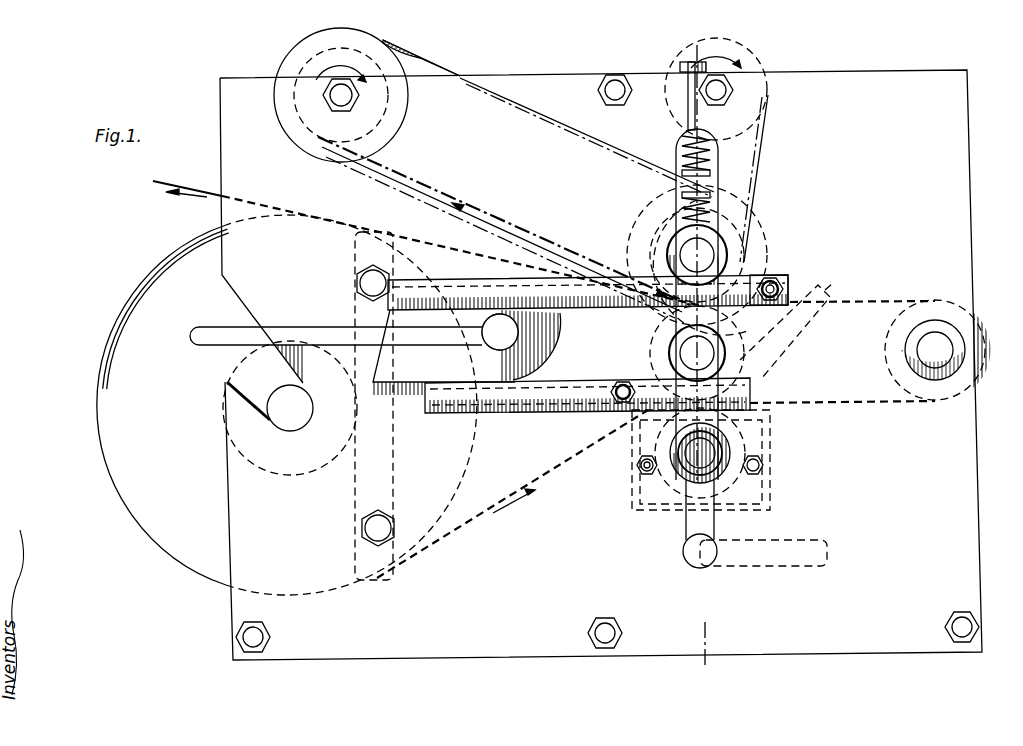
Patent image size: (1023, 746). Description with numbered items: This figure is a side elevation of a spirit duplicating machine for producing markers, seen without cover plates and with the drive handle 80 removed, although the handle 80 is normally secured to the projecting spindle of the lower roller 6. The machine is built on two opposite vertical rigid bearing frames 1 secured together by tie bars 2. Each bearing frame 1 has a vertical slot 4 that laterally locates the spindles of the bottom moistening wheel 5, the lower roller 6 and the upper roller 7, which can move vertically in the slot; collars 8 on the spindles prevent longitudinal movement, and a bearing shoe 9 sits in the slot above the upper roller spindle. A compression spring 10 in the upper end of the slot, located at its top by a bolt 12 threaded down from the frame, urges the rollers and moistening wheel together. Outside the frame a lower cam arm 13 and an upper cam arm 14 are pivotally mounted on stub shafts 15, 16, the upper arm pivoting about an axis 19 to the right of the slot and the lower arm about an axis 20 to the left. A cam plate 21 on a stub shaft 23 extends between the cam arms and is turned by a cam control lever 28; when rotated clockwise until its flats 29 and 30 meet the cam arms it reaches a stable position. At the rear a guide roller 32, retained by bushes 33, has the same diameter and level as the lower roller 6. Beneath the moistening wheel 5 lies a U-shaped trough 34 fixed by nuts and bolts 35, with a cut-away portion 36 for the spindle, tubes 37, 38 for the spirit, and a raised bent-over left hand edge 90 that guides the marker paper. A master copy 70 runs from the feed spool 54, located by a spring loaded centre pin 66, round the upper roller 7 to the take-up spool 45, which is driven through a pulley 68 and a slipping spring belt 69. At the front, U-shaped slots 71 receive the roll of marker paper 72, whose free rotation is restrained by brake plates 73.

The bearing frame 1 is at (876, 109).
The tie bar 2 is at (613, 80).
The vertical slot 4 is at (700, 207).
The bottom moistening wheel 5 is at (763, 441).
The lower roller 6 is at (730, 336).
The upper roller 7 is at (747, 258).
The collar 8 is at (668, 244).
The bearing shoe 9 is at (682, 222).
The compression spring 10 is at (686, 163).
The bolt 12 is at (685, 68).
The lower cam arm 13 is at (545, 402).
The upper cam arm 14 is at (606, 300).
The stub shaft 15 is at (640, 413).
The stub shaft 16 is at (801, 292).
The axis 19 is at (782, 282).
The axis 20 is at (623, 383).
The cam plate 21 is at (471, 380).
The stub shaft 23 is at (502, 352).
The cam control lever 28 is at (291, 330).
The flat 29 is at (567, 334).
The flat 30 is at (360, 345).
The guide roller 32 is at (936, 305).
The bush 33 is at (927, 325).
The trough 34 is at (636, 516).
The nuts and bolts 35 is at (762, 470).
The cut-away portion 36 is at (683, 498).
The tube 37 is at (831, 293).
The tube 38 is at (752, 546).
The take-up spool 45 is at (396, 106).
The feed spool 54 is at (757, 58).
The spring loaded centre pin 66 is at (724, 102).
The pulley 68 is at (398, 57).
The spring belt 69 is at (443, 73).
The master copy 70 is at (763, 143).
The U-shaped slot 71 is at (247, 409).
The roll of marker paper 72 is at (157, 258).
The brake plate 73 is at (385, 448).
The handle 80 is at (684, 559).
The left hand edge 90 is at (640, 461).